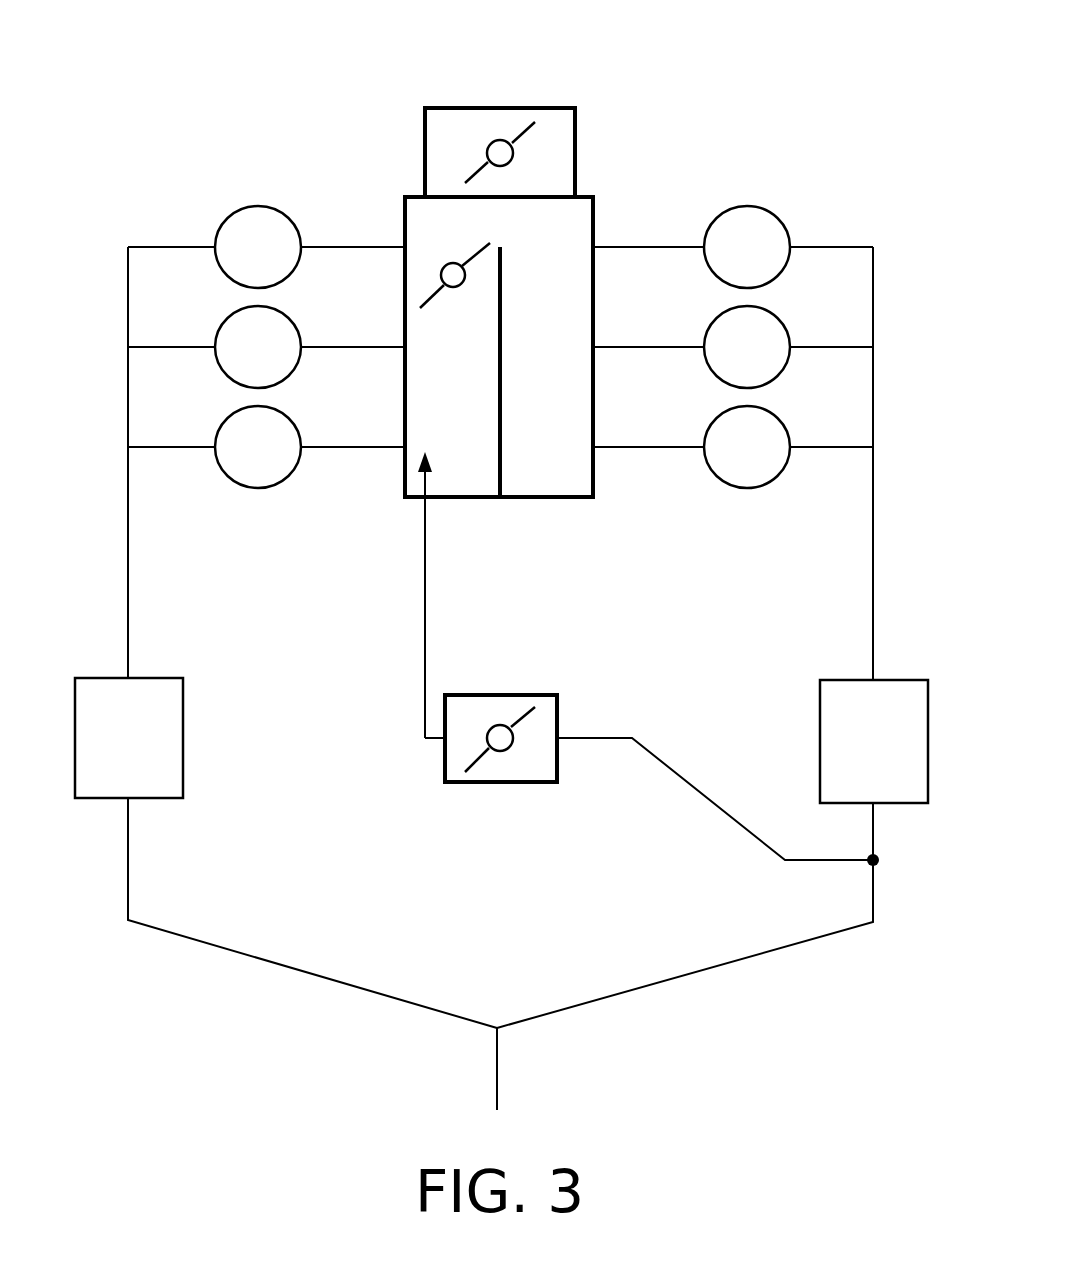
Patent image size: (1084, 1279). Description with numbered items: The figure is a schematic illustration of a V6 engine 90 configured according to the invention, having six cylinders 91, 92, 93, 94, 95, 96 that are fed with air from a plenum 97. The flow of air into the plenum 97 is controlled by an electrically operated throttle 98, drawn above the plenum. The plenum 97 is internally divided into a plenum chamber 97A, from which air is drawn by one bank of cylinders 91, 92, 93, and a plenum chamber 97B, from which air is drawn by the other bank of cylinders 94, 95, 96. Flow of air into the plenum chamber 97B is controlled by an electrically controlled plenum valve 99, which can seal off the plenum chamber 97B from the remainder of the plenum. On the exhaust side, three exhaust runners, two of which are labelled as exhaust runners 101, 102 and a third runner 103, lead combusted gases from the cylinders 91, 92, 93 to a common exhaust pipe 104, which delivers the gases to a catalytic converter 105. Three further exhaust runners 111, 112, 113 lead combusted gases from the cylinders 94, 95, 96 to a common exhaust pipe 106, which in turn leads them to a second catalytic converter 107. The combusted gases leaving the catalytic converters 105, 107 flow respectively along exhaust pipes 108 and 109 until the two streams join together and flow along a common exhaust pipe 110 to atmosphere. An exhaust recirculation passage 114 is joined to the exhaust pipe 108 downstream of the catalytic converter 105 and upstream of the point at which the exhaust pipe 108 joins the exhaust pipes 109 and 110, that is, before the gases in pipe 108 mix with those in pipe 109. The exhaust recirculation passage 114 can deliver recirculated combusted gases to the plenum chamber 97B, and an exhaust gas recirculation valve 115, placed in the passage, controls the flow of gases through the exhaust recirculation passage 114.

The V6 engine 90 is at (766, 86).
The cylinder 91 is at (729, 262).
The cylinder 92 is at (729, 362).
The cylinder 93 is at (729, 462).
The cylinder 94 is at (240, 262).
The cylinder 95 is at (240, 362).
The cylinder 96 is at (240, 462).
The plenum 97 is at (403, 194).
The plenum chamber 97A is at (519, 413).
The plenum chamber 97B is at (424, 413).
The electrically operated throttle 98 is at (573, 108).
The electrically controlled plenum valve 99 is at (453, 287).
The exhaust runner 101 is at (610, 247).
The exhaust runner 102 is at (610, 347).
The third outlet line 103 is at (610, 447).
The common exhaust pipe 104 is at (874, 568).
The catalytic converter 105 is at (848, 757).
The common exhaust pipe 106 is at (127, 562).
The catalytic converter 107 is at (102, 755).
The exhaust pipe 108 is at (673, 978).
The exhaust pipe 109 is at (318, 979).
The common exhaust pipe 110 is at (498, 1067).
The exhaust runner 111 is at (390, 246).
The exhaust runner 112 is at (390, 346).
The exhaust runner 113 is at (390, 446).
The exhaust recirculation passage 114 is at (698, 795).
The exhaust gas recirculation valve 115 is at (558, 697).